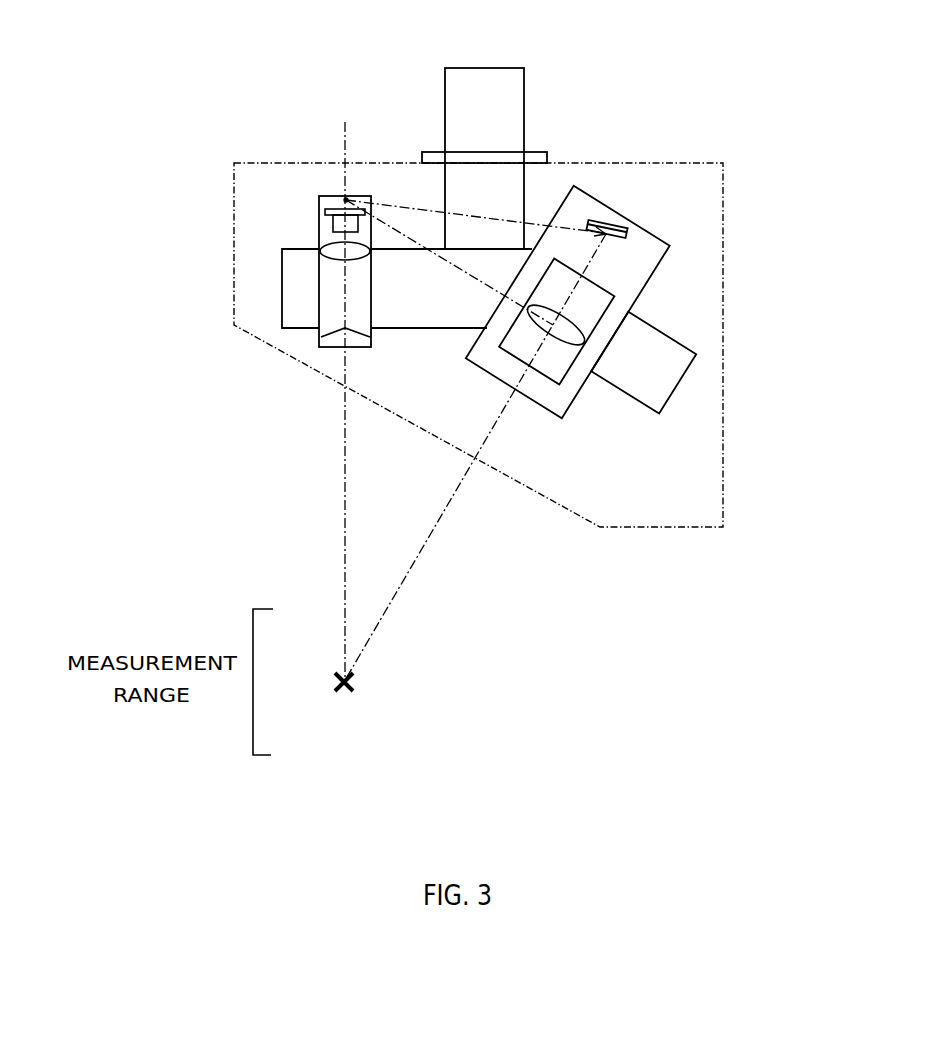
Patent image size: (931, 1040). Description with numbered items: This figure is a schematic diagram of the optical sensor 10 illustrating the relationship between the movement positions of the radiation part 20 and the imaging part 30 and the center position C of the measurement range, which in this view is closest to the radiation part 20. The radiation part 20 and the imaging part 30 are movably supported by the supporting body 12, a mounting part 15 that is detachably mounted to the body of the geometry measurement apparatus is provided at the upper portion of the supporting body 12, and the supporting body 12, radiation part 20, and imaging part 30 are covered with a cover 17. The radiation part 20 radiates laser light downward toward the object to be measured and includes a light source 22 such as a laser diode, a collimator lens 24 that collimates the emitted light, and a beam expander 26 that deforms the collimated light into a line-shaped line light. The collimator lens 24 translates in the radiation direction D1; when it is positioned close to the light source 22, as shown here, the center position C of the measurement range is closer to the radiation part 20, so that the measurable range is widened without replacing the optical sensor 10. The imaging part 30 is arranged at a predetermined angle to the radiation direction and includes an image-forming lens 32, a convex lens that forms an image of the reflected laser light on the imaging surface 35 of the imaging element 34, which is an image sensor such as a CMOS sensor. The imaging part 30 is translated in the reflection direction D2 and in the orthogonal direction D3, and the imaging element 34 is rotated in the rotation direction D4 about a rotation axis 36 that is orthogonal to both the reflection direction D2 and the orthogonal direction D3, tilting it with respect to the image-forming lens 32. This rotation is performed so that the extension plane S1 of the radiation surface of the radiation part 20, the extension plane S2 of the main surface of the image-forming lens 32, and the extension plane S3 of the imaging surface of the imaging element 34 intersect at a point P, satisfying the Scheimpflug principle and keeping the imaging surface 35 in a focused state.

The optical sensor 10 is at (588, 76).
The supporting body 12 is at (443, 330).
The mounting part 15 is at (524, 117).
The cover 17 is at (633, 163).
The radiation part 20 is at (319, 220).
The light source 22 is at (356, 223).
The collimator lens 24 is at (371, 255).
The beam expander 26 is at (372, 340).
The imaging part 30 is at (538, 412).
The image-forming lens 32 is at (582, 346).
The imaging element 34 is at (619, 221).
The imaging surface 35 is at (632, 243).
The rotation axis 36 is at (602, 218).
The point P is at (344, 198).
The center position of the measurement range C is at (344, 699).
The extension plane of the radiation surface S1 is at (348, 373).
The extension plane of the main surface of the image-forming lens S2 is at (441, 257).
The extension plane of the imaging surface S3 is at (478, 215).
The radiation direction D1 is at (311, 260).
The reflection direction D2 is at (568, 485).
The orthogonal direction D3 is at (560, 450).
The rotation direction D4 is at (625, 250).